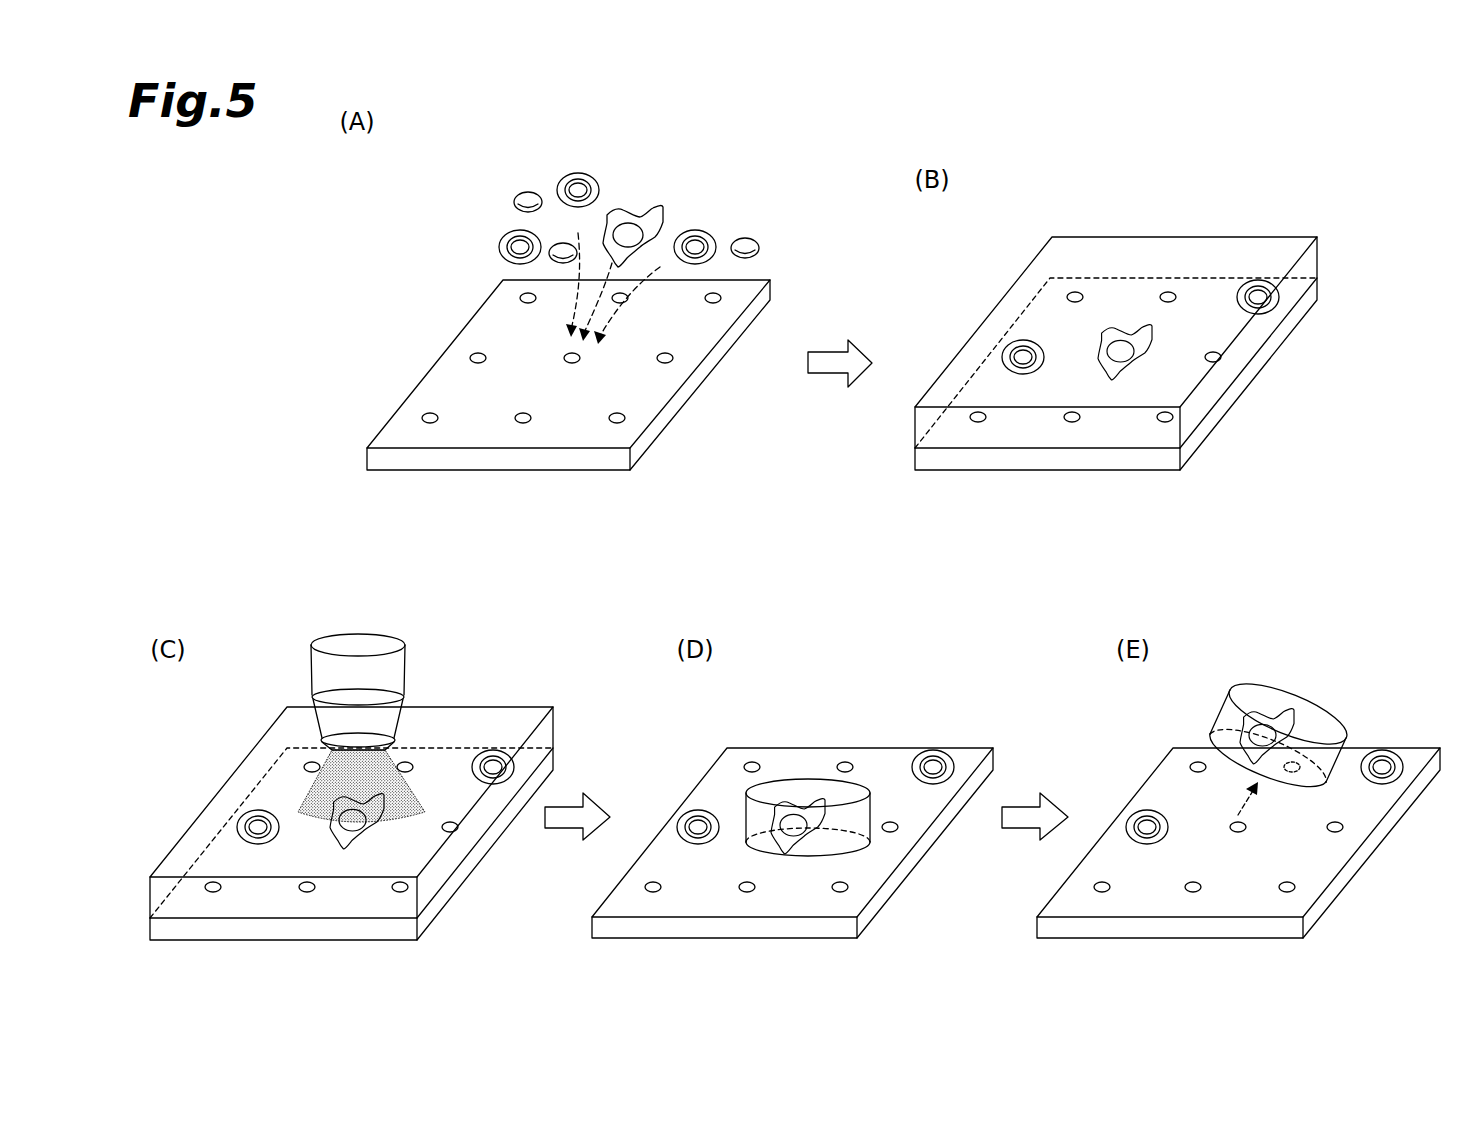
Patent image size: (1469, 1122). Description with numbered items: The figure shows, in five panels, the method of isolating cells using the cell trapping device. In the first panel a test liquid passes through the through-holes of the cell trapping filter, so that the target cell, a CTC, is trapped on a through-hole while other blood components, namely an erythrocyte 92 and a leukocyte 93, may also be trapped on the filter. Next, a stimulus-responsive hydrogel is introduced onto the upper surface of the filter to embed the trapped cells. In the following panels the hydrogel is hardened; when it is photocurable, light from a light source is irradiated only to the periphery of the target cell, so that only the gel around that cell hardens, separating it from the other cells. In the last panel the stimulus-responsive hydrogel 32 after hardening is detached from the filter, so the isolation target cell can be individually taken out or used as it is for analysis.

The hardened stimulus-responsive hydrogel 32 is at (1287, 692).
The erythrocyte 92 is at (522, 192).
The leukocyte 93 is at (498, 250).